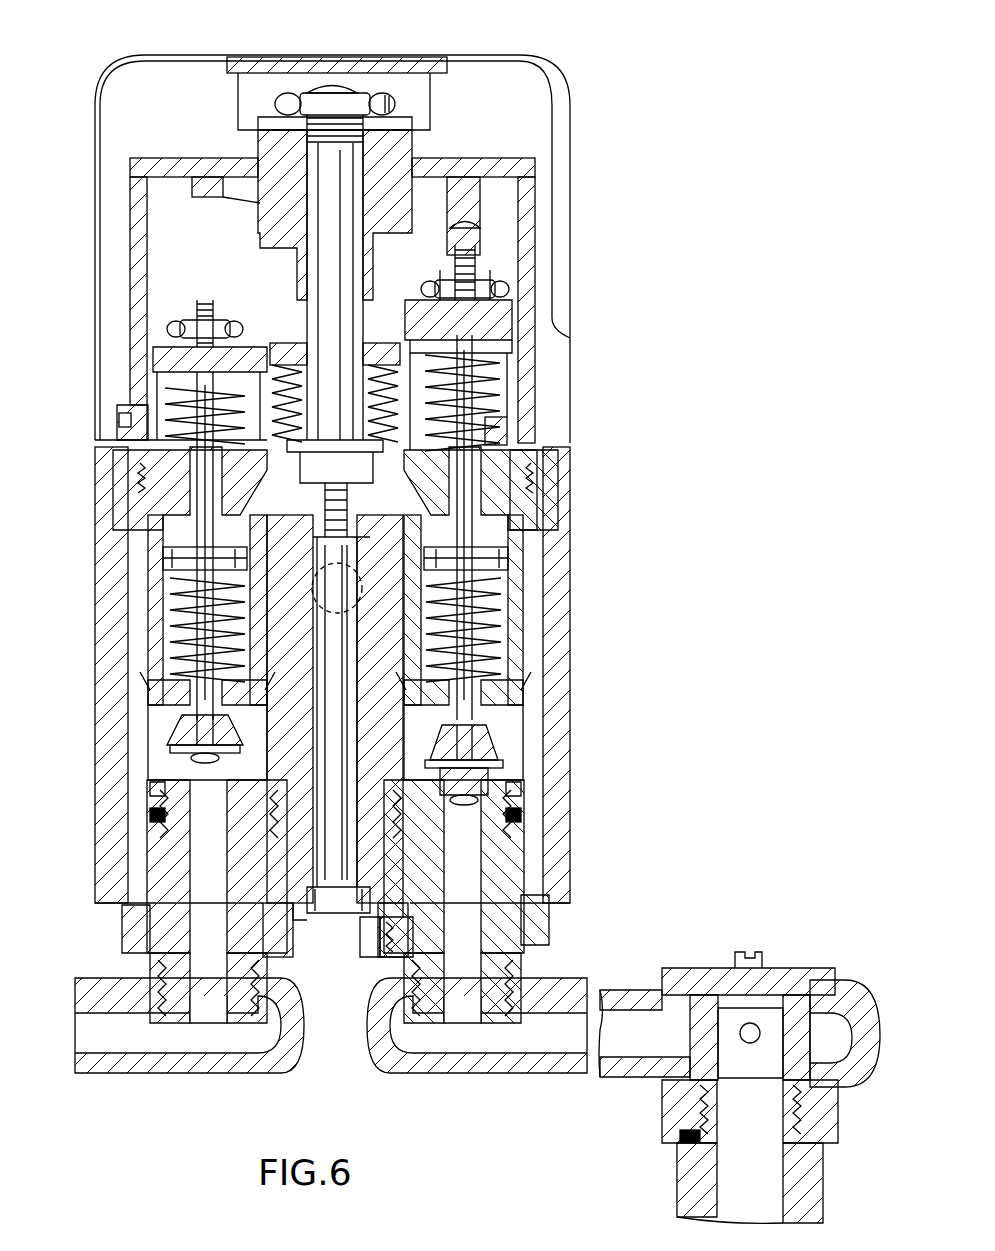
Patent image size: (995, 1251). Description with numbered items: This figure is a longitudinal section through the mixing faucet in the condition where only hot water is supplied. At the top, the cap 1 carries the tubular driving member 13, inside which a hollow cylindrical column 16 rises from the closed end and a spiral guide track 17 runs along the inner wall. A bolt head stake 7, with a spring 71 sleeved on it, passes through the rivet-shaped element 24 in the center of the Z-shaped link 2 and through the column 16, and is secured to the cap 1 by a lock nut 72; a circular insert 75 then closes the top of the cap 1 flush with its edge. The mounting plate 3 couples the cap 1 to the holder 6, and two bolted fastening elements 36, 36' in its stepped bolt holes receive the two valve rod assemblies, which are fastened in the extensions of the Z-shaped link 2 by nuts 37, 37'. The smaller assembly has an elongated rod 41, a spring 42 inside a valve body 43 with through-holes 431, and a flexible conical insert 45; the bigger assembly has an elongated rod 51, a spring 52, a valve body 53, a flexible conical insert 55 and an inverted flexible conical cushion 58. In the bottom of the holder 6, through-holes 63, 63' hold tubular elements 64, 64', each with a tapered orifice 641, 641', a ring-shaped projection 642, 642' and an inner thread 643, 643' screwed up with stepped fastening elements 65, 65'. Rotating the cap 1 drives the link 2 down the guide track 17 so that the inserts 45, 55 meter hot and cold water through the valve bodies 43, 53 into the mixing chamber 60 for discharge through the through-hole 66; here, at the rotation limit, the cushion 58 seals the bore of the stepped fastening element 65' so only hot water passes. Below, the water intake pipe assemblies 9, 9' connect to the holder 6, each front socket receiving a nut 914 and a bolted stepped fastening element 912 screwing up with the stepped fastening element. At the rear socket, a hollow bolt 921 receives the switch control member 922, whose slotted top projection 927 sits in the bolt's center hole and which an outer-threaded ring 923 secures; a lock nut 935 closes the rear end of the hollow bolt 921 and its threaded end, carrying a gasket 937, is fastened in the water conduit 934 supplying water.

The cap 1 is at (455, 80).
The circular insert 75 is at (335, 57).
The lock nut 72 is at (290, 95).
The bolt head stake 7 is at (330, 178).
The hollow cylindrical column 16 is at (262, 225).
The spiral guide track 17 is at (462, 230).
The tubular driving member 13 is at (540, 200).
The Z-shaped link 2 is at (272, 320).
The rivet-shaped element 24 is at (300, 280).
The spring 71 is at (352, 440).
The nut 37 is at (151, 374).
The spring 42 is at (160, 410).
The nut 37' is at (515, 288).
The elongated rod 51 is at (468, 362).
The spring 52 is at (488, 405).
The holder 6 is at (552, 583).
The bolted fastening element 36 is at (151, 488).
The elongated rod 41 is at (195, 529).
The valve body 43 is at (155, 575).
The through-holes 431 is at (155, 637).
The tapered orifice 641 is at (148, 696).
The tubular element 64 is at (148, 742).
The flexible conical insert 45 is at (216, 739).
The through-hole 63 is at (164, 868).
The ring-shaped projection 642 is at (88, 798).
The inner thread 643 is at (90, 826).
The stepped fastening element 65 is at (156, 964).
The bolted fastening element 36' is at (520, 488).
The mounting plate 3 is at (540, 520).
The valve body 53 is at (527, 548).
The tapered orifice 641' is at (524, 647).
The tubular element 64' is at (518, 742).
The flexible conical insert 55 is at (440, 740).
The flexible conical cushion 58 is at (440, 785).
The through-hole 63' is at (505, 868).
The ring-shaped projection 642' is at (579, 786).
The inner thread 643' is at (579, 821).
The stepped fastening element 65' is at (520, 957).
The mixing chamber 60 is at (390, 625).
The through-hole 66 is at (305, 612).
The nut 914 is at (392, 930).
The bolted stepped fastening element 912 is at (415, 967).
The water intake pipe assembly 9' is at (189, 1049).
The water intake pipe assembly 9 is at (477, 1054).
The hollow bolt 921 is at (795, 990).
The slotted top projection 927 is at (757, 955).
The switch control member 922 is at (712, 1000).
The water conduit 934 is at (822, 1180).
The lock nut 935 is at (668, 1108).
The outer-threaded ring 923 is at (820, 1098).
The gasket 937 is at (688, 1136).